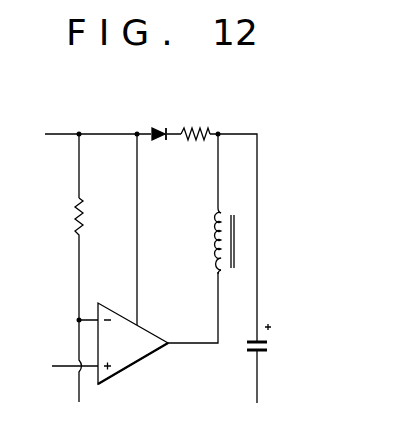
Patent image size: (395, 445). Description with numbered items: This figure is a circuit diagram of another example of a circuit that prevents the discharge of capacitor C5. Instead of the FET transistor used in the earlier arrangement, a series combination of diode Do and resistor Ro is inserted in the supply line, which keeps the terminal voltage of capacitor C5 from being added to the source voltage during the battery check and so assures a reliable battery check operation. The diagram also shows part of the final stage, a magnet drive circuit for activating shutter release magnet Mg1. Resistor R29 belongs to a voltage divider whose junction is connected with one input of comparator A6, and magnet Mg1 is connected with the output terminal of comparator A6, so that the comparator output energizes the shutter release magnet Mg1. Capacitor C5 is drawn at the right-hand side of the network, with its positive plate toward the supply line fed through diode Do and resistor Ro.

The diode Do is at (155, 128).
The resistor Ro is at (196, 128).
The resistor R29 is at (75, 213).
The comparator A6 is at (135, 328).
The shutter release magnet Mg1 is at (212, 246).
The capacitor C5 is at (269, 347).